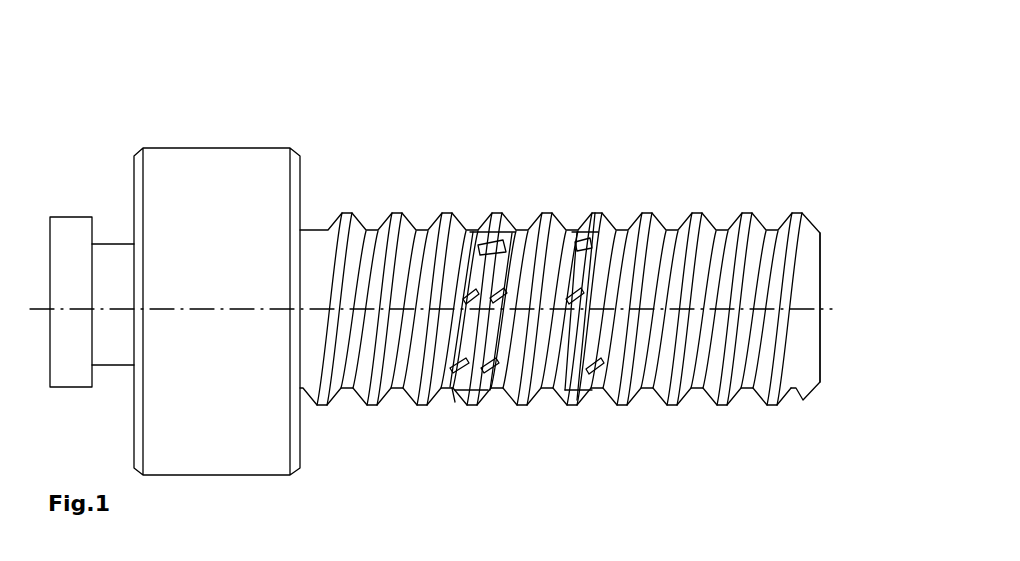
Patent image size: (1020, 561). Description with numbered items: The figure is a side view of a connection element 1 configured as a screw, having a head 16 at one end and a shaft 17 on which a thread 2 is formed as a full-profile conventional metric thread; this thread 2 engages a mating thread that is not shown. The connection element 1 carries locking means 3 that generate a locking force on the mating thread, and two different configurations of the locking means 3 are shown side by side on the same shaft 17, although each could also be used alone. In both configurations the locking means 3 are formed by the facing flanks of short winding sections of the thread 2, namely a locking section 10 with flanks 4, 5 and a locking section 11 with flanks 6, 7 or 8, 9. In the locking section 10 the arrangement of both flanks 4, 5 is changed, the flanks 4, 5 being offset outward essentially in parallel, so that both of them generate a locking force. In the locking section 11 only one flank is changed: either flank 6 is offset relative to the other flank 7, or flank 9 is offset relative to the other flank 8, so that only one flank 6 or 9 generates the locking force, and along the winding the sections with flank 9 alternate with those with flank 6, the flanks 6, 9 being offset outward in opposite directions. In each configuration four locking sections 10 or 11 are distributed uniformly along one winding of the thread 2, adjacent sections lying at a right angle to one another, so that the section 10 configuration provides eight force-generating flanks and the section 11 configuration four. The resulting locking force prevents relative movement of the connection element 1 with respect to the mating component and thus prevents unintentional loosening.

The connection element 1 is at (462, 168).
The thread 2 is at (808, 208).
The locking means 3 is at (468, 470).
The flank 4 is at (462, 218).
The flank 5 is at (518, 218).
The flank 6 is at (582, 218).
The flank 7 is at (616, 222).
The flank 8 is at (563, 402).
The flank 9 is at (593, 402).
The locking section 10 is at (497, 218).
The locking section 11 is at (597, 218).
The head 16 is at (183, 178).
The shaft 17 is at (812, 337).